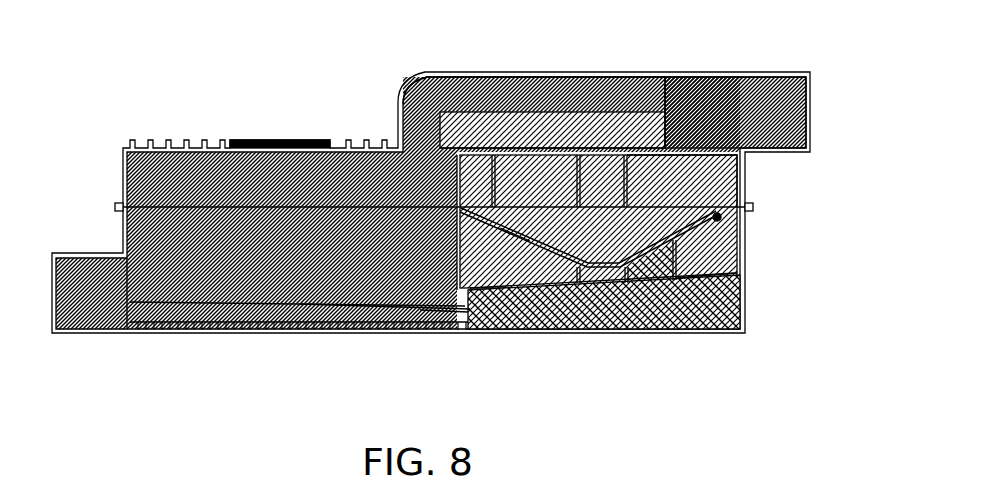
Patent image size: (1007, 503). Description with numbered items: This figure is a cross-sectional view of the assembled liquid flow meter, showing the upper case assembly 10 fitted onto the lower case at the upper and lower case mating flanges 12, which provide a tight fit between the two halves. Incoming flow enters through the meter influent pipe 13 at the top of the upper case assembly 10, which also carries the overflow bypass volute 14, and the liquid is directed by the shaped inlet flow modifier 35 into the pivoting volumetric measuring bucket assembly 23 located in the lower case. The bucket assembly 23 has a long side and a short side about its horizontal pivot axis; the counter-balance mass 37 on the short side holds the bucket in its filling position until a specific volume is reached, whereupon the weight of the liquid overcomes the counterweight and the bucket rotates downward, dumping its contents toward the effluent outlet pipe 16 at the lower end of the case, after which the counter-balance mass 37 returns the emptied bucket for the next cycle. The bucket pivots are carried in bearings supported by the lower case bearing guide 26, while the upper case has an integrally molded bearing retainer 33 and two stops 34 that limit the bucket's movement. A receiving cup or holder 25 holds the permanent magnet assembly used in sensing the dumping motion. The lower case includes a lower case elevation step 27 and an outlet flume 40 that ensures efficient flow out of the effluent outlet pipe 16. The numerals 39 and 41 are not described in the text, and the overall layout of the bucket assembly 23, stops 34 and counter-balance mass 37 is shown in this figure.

The upper case assembly 10 is at (790, 158).
The upper and lower case mating flanges 12 is at (118, 207).
The meter influent pipe 13 is at (778, 72).
The overflow bypass volute 14 is at (440, 72).
The effluent outlet pipe 16 is at (90, 336).
The pivoting volumetric measuring bucket assembly 23 is at (512, 242).
The receiving cup or holder 25 is at (745, 222).
The lower case bearing guide 26 is at (593, 276).
The lower case elevation step 27 is at (460, 307).
The bearing retainer 33 is at (605, 195).
The stops 34 is at (475, 192).
The shaped inlet flow modifier 35 is at (678, 157).
The counter-balance mass 37 is at (675, 247).
The baffle 39 is at (602, 240).
The outlet flume 40 is at (232, 330).
The lower compartment 41 is at (690, 268).